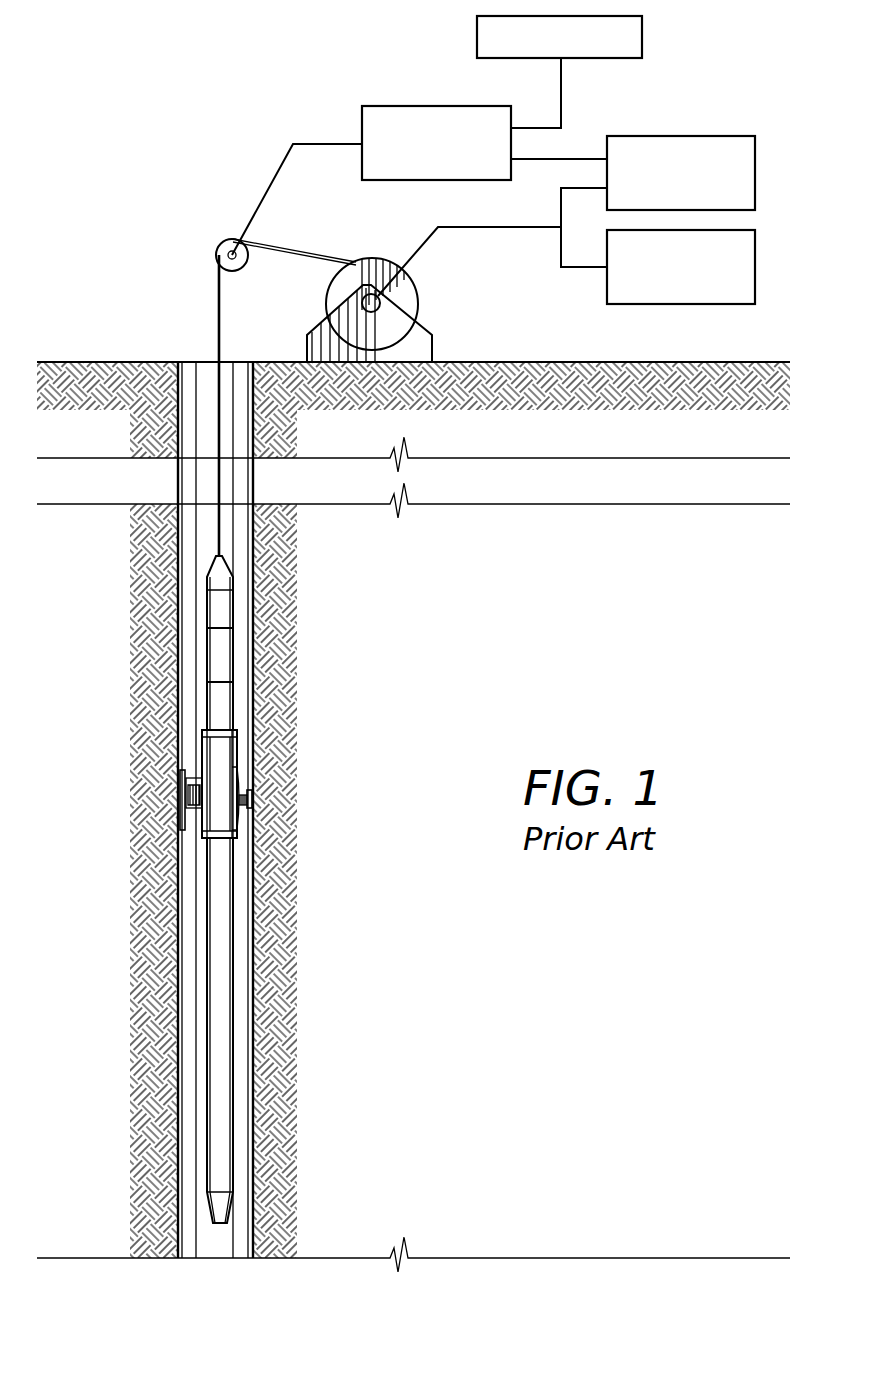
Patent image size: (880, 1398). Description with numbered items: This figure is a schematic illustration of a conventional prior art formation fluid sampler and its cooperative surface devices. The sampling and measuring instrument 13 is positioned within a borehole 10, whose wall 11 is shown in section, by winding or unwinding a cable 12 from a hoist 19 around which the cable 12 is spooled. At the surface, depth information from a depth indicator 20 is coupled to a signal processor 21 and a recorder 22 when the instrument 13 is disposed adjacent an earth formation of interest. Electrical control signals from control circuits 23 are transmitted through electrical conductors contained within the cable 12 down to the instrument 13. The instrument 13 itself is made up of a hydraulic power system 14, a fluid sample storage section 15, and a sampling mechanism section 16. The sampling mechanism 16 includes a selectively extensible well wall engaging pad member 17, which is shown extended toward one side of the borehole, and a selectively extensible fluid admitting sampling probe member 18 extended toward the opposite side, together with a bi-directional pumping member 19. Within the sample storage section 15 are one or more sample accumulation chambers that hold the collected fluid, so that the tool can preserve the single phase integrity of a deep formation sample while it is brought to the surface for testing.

The borehole 10 is at (242, 412).
The borehole wall 11 is at (253, 900).
The cable 12 is at (219, 521).
The sampling and measuring instrument 13 is at (224, 603).
The hydraulic power system 14 is at (225, 650).
The fluid sample storage section 15 is at (225, 1018).
The sampling mechanism section 16 is at (228, 743).
The well wall engaging pad member 17 is at (180, 786).
The fluid admitting sampling probe member 18 is at (252, 805).
The hoist 19 is at (417, 305).
The depth indicator 20 is at (397, 106).
The signal processor 21 is at (650, 136).
The recorder 22 is at (477, 40).
The control circuits 23 is at (650, 304).